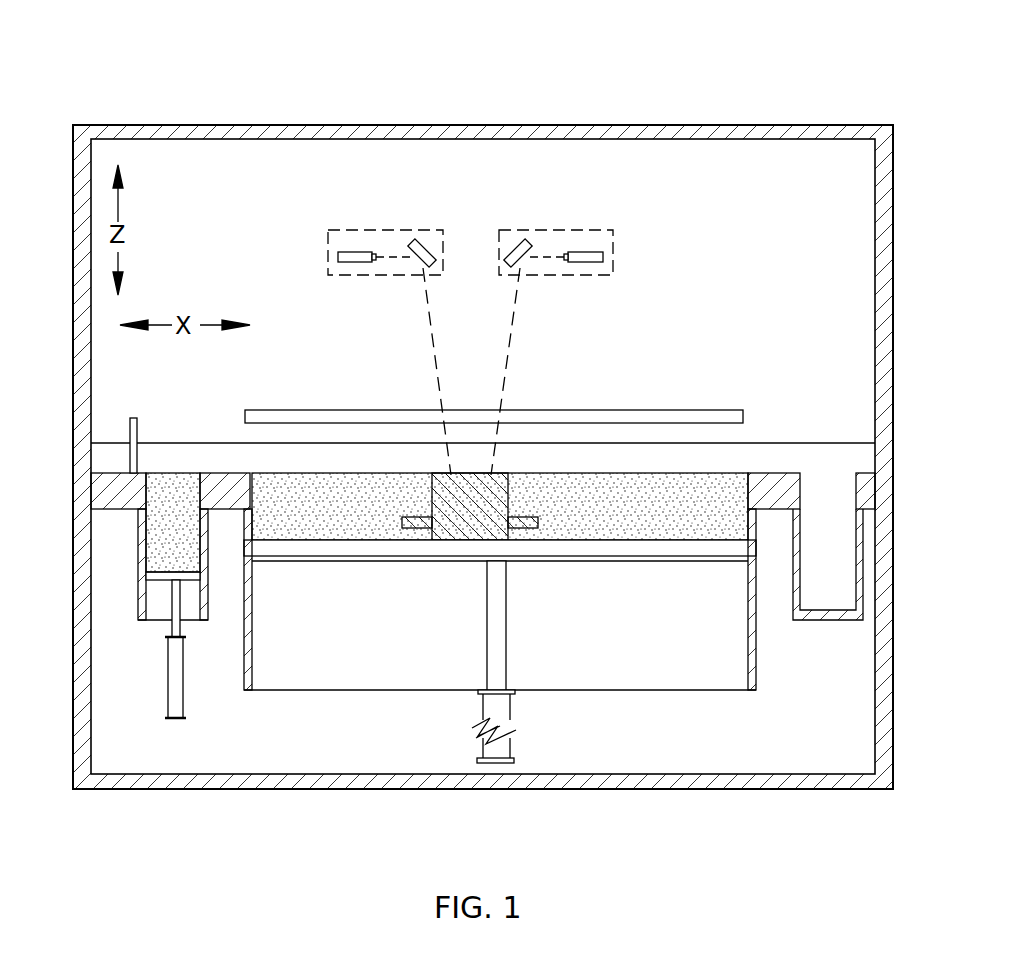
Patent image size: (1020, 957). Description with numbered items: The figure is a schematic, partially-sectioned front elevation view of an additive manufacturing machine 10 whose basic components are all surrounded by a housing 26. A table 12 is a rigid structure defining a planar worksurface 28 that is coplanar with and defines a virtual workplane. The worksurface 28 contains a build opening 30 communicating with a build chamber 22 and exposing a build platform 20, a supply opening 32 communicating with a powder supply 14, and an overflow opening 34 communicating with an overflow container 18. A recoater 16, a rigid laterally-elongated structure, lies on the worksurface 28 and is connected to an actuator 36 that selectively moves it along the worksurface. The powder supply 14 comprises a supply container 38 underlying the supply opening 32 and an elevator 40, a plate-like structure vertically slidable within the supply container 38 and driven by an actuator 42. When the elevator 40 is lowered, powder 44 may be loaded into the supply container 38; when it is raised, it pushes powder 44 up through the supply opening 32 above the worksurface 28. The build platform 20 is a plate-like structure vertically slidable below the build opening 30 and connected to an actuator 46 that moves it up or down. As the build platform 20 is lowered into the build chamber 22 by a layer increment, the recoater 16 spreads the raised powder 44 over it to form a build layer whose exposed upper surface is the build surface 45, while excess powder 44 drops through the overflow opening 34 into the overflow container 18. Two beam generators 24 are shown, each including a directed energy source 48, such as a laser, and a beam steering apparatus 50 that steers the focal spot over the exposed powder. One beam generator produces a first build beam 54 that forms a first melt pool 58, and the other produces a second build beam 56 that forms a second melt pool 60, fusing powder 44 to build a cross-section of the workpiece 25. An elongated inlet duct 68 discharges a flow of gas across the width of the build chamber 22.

The additive manufacturing machine 10 is at (485, 52).
The table 12 is at (103, 493).
The powder supply 14 is at (164, 562).
The recoater 16 is at (137, 427).
The overflow container 18 is at (820, 655).
The build platform 20 is at (630, 557).
The build chamber 22 is at (752, 628).
The beam generator 24 is at (355, 230).
The workpiece 25 is at (486, 522).
The housing 26 is at (888, 176).
The worksurface 28 is at (782, 450).
The build opening 30 is at (742, 470).
The supply opening 32 is at (194, 490).
The overflow opening 34 is at (848, 482).
The actuator 36 is at (120, 458).
The supply container 38 is at (146, 578).
The elevator 40 is at (182, 590).
The actuator 42 is at (183, 680).
The powder 44 is at (188, 552).
The build surface 45 is at (700, 440).
The actuator 46 is at (506, 628).
The directed energy source 48 is at (355, 262).
The beam steering apparatus 50 is at (427, 243).
The first build beam 54 is at (433, 352).
The second build beam 56 is at (510, 352).
The first melt pool 58 is at (450, 474).
The second melt pool 60 is at (490, 474).
The inlet duct 68 is at (640, 412).